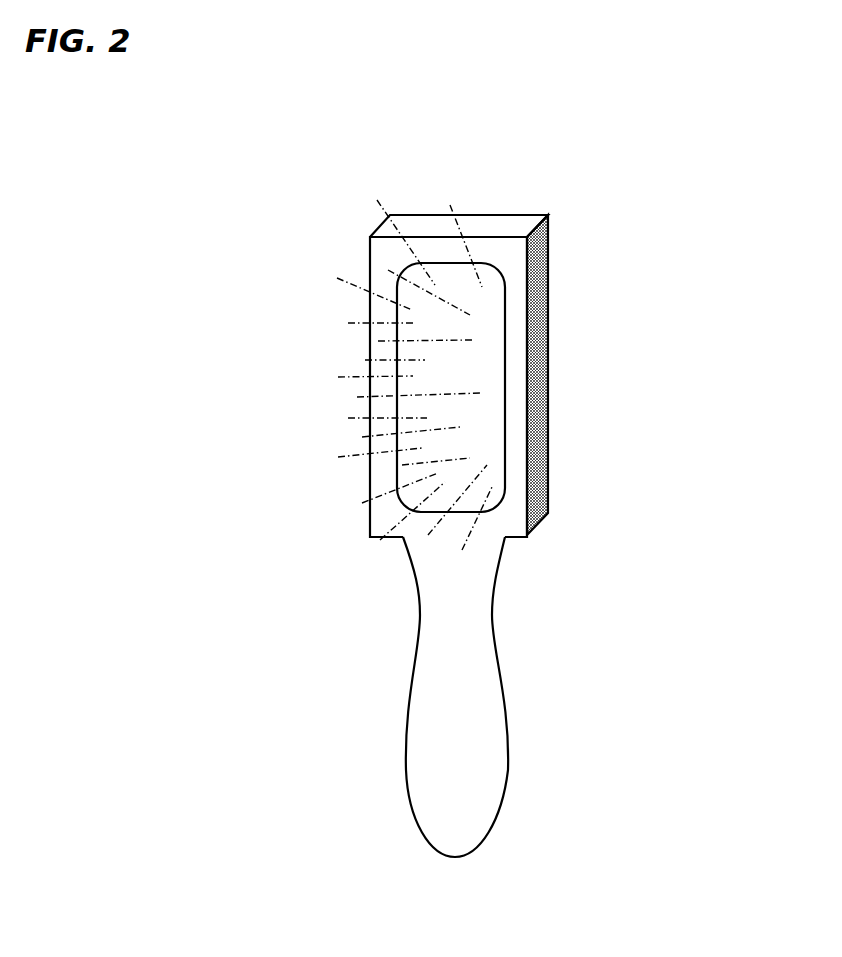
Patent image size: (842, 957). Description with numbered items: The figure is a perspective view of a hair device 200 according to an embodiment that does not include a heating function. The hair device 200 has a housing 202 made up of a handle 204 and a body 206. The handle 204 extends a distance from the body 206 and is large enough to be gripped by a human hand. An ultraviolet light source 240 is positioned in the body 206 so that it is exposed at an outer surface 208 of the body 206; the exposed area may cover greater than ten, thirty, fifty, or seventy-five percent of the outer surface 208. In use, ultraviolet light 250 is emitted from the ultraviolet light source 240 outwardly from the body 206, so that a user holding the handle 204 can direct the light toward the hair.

The hair device 200 is at (582, 190).
The housing 202 is at (536, 487).
The handle 204 is at (540, 680).
The body 206 is at (570, 283).
The outer surface 208 is at (512, 428).
The ultraviolet light source 240 is at (492, 373).
The ultraviolet light 250 is at (334, 275).